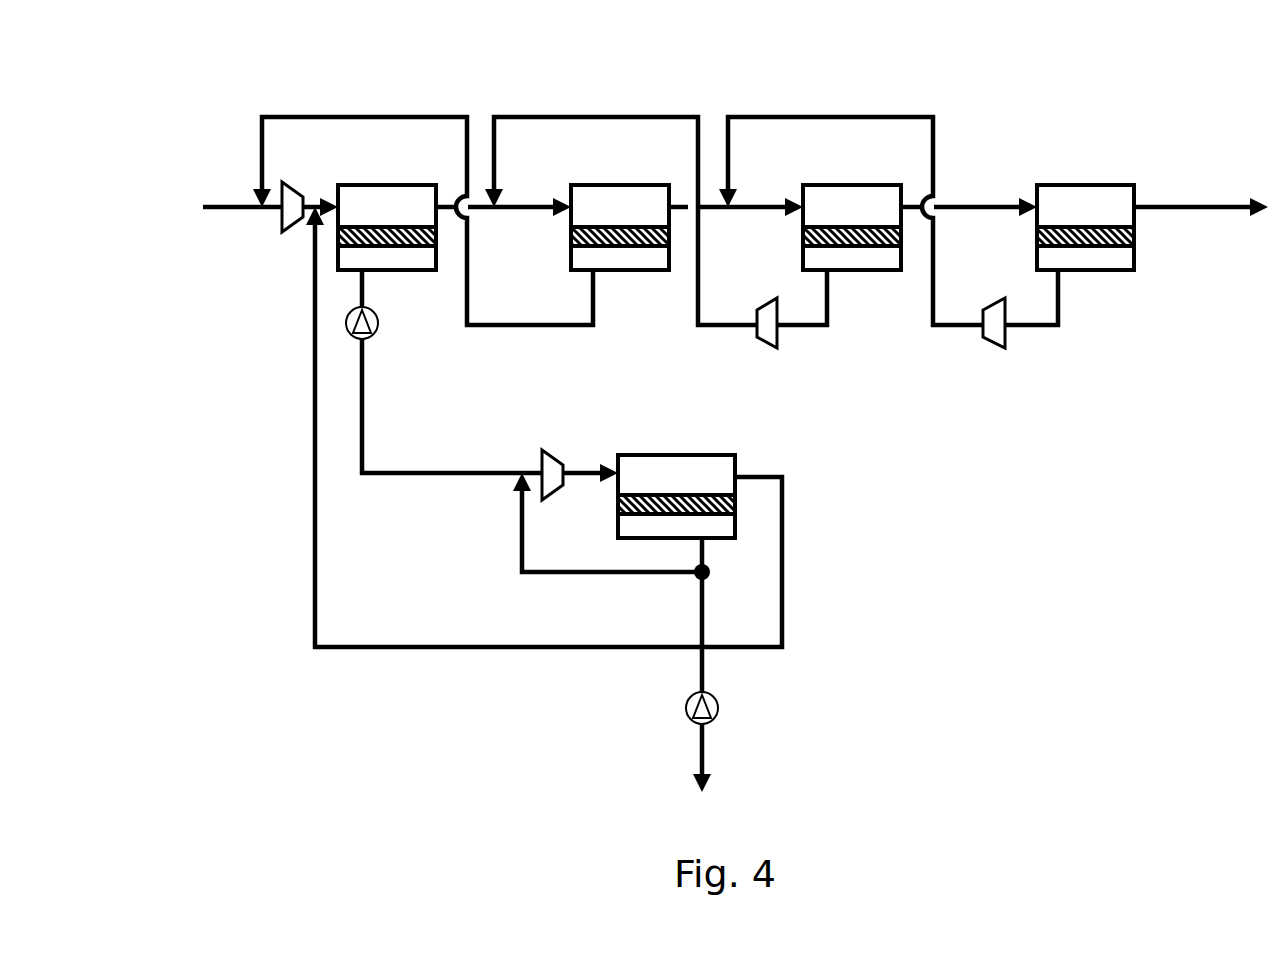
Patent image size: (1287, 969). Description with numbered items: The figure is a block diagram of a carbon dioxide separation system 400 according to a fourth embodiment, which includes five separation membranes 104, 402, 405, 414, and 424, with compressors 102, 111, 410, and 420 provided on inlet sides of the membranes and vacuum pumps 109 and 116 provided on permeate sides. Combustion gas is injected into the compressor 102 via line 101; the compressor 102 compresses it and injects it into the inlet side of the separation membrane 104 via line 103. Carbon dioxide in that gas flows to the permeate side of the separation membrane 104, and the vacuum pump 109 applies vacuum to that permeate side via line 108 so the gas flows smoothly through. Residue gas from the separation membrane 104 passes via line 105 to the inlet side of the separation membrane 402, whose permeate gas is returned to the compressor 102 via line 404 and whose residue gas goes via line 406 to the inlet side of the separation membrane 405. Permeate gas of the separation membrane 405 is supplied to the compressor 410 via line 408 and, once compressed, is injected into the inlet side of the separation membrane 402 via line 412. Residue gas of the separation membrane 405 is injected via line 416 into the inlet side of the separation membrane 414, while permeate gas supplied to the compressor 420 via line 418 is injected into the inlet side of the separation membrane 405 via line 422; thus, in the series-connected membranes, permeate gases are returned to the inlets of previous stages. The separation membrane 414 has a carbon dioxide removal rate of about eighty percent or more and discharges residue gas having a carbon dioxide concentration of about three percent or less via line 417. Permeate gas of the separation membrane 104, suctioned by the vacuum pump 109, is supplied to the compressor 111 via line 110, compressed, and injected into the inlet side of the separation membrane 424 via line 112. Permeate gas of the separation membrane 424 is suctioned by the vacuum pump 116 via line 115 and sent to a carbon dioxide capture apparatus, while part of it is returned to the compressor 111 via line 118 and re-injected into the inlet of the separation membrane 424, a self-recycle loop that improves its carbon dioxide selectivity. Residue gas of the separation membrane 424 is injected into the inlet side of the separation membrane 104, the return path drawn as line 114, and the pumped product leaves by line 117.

The line 101 is at (237, 212).
The compressor 102 is at (280, 233).
The line 103 is at (307, 200).
The separation membrane 104 is at (378, 187).
The line 105 is at (510, 200).
The line 108 is at (363, 290).
The vacuum pump 109 is at (375, 337).
The line 110 is at (373, 470).
The compressor 111 is at (552, 448).
The line 112 is at (597, 477).
The residue recycle line 114 is at (477, 653).
The line 115 is at (697, 605).
The vacuum pump 116 is at (722, 712).
The permeate product stream 117 is at (708, 768).
The line 118 is at (515, 550).
The carbon dioxide separation system 400 is at (1008, 554).
The separation membrane 402 is at (648, 272).
The line 404 is at (520, 327).
The separation membrane 405 is at (885, 272).
The line 406 is at (743, 200).
The line 408 is at (818, 282).
The compressor 410 is at (757, 340).
The line 412 is at (565, 117).
The separation membrane 414 is at (1068, 177).
The line 416 is at (952, 200).
The line 417 is at (1175, 197).
The line 418 is at (1060, 303).
The compressor 420 is at (992, 345).
The line 422 is at (800, 117).
The separation membrane 424 is at (728, 448).